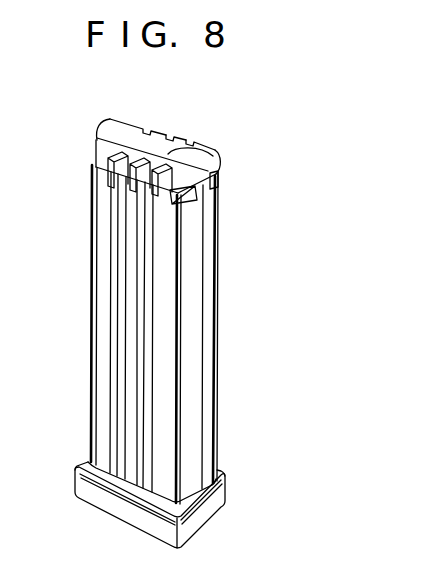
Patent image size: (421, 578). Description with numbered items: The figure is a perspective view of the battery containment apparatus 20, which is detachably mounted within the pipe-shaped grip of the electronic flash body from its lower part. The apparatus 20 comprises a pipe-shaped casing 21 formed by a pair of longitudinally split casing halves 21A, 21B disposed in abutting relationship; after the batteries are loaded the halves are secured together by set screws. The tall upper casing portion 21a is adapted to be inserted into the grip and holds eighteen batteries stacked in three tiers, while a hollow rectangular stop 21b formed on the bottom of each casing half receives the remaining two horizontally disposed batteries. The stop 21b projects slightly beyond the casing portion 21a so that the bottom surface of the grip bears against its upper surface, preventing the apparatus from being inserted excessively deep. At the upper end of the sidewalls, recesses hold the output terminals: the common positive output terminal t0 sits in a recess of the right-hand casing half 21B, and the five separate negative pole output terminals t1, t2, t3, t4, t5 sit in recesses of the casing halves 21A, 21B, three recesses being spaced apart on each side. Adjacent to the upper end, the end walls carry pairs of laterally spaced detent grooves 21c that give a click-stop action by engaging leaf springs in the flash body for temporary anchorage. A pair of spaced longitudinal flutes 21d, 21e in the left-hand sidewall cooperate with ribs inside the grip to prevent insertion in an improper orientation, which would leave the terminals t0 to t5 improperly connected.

The battery containment apparatus 20 is at (87, 371).
The casing 21 is at (267, 332).
The casing half 21A is at (195, 363).
The casing half 21B is at (209, 338).
The casing portion 21a is at (100, 417).
The stop 21b is at (80, 482).
The detent grooves 21c is at (96, 163).
The longitudinal flute 21d is at (121, 273).
The longitudinal flute 21e is at (150, 321).
The output terminal t0 is at (193, 145).
The negative pole output terminal t1 is at (103, 158).
The negative pole output terminal t2 is at (140, 180).
The negative pole output terminal t3 is at (217, 152).
The negative pole output terminal t4 is at (148, 124).
The negative pole output terminal t5 is at (173, 137).